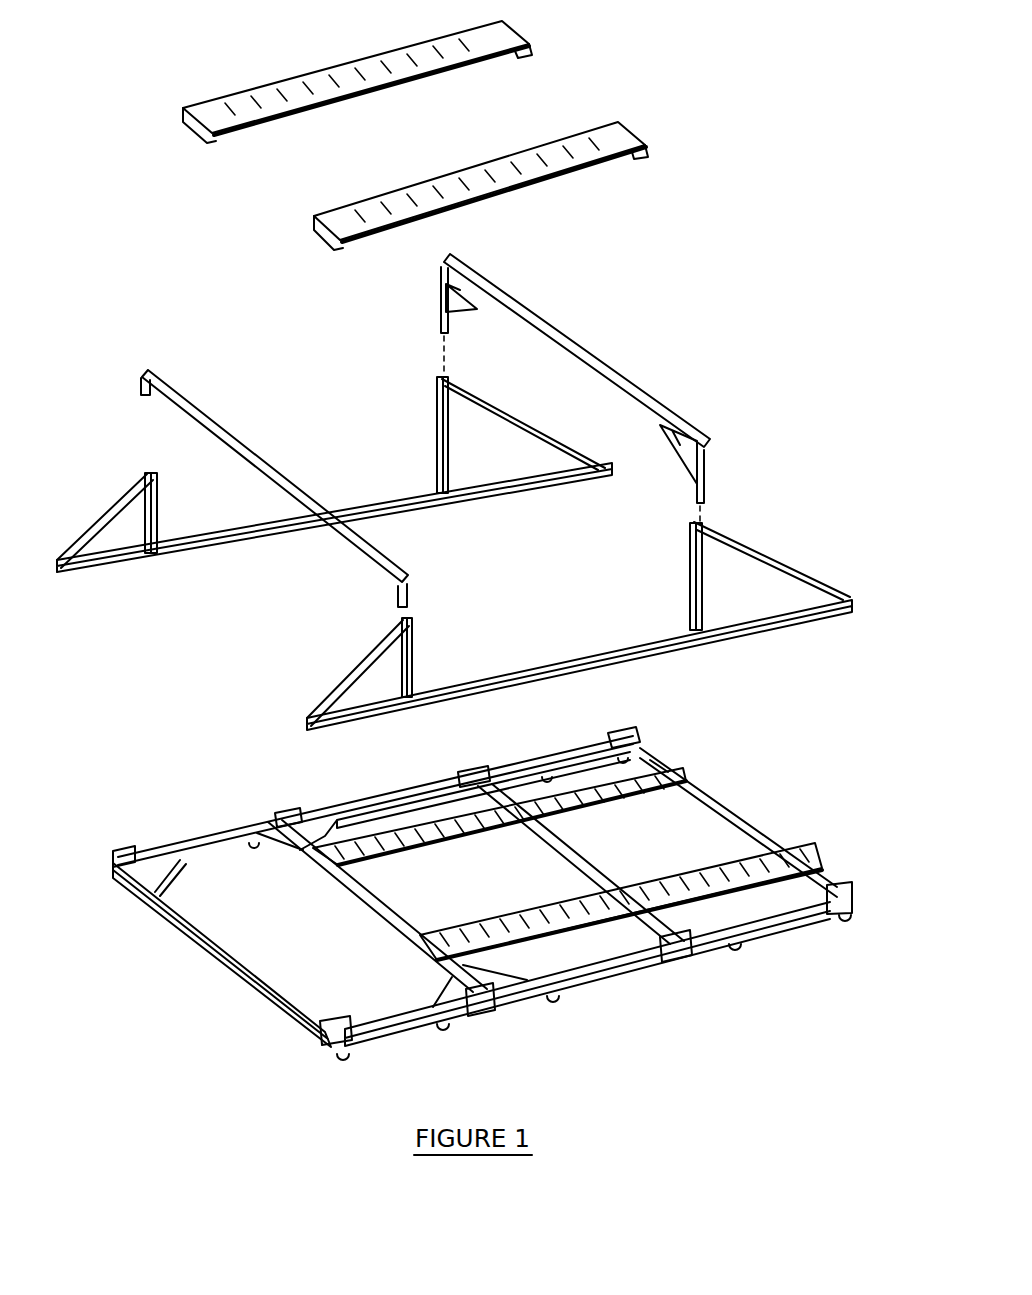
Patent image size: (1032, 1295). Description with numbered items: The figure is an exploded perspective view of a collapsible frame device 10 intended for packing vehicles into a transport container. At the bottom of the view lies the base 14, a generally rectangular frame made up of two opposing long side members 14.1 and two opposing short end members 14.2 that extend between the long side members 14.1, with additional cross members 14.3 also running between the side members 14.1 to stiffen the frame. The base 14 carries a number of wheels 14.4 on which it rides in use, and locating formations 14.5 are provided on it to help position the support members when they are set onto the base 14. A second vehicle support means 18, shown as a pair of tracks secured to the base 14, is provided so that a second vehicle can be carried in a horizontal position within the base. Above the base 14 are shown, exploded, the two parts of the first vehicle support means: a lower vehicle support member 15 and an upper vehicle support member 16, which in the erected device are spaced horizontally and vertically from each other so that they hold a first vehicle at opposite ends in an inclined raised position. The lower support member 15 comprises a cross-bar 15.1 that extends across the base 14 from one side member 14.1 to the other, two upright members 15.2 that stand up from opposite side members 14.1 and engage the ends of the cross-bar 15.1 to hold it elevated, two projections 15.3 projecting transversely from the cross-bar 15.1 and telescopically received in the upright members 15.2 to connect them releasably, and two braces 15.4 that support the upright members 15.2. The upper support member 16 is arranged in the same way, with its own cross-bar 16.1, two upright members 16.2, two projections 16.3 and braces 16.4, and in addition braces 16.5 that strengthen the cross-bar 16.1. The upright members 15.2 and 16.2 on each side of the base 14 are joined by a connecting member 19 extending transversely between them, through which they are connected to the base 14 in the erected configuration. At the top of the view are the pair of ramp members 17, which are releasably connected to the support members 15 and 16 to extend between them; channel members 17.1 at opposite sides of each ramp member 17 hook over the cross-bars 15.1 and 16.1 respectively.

The collapsible frame device 10 is at (847, 677).
The base 14 is at (700, 737).
The long side members 14.1 is at (383, 798).
The short end members 14.2 is at (237, 957).
The cross members 14.3 is at (357, 887).
The wheels 14.4 is at (548, 997).
The locating formations 14.5 is at (620, 737).
The lower vehicle support member 15 is at (257, 610).
The cross-bar 15.1 is at (280, 478).
The upright members 15.2 is at (157, 517).
The projections 15.3 is at (146, 393).
The braces 15.4 is at (100, 523).
The upper vehicle support member 16 is at (653, 487).
The cross-bar 16.1 is at (627, 378).
The upright members 16.2 is at (442, 435).
The projections 16.3 is at (447, 297).
The braces 16.4 is at (510, 417).
The braces 16.5 is at (470, 300).
The ramp members 17 is at (360, 92).
The channel members 17.1 is at (198, 136).
The second vehicle support means 18 is at (437, 847).
The connecting member 19 is at (397, 511).